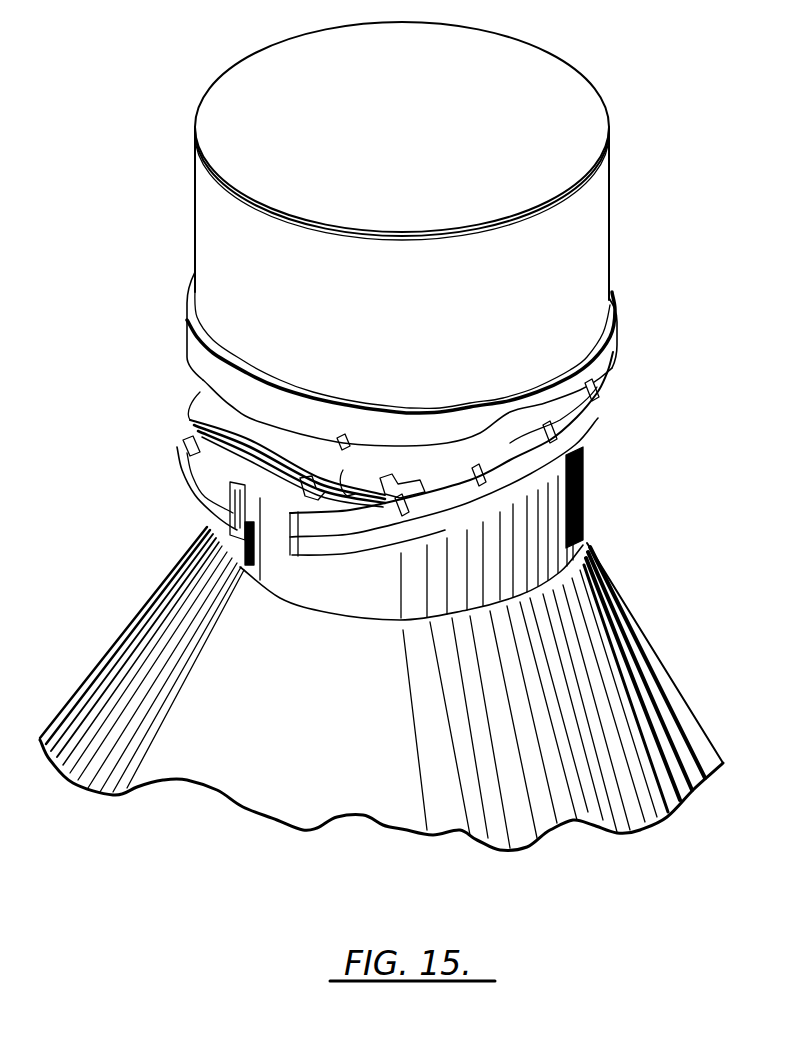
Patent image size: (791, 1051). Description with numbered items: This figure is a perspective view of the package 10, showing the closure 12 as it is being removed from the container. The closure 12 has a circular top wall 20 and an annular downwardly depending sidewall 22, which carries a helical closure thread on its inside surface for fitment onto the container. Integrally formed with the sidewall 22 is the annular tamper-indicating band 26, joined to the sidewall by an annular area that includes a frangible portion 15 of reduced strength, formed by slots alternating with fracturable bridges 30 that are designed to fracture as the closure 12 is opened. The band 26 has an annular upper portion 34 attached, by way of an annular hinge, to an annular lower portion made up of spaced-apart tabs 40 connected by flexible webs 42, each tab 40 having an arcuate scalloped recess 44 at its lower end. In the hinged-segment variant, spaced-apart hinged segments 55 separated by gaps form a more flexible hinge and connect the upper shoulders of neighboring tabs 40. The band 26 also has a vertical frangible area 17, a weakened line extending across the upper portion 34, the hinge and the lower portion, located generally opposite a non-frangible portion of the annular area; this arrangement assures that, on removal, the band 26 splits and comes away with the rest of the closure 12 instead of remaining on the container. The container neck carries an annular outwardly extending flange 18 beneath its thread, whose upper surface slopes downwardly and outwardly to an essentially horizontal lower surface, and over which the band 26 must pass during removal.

The package 10 is at (628, 467).
The closure 12 is at (611, 42).
The frangible portion 15 is at (650, 590).
The vertical frangible area 17 is at (274, 538).
The annular outwardly extending flange 18 is at (235, 475).
The circular top wall 20 is at (396, 126).
The annular downwardly depending sidewall 22 is at (436, 318).
The annular tamper-indicating band 26 is at (622, 373).
The fracturable bridges 30 is at (188, 446).
The annular upper portion 34 is at (412, 560).
The tabs 40 is at (306, 462).
The flexible webs 42 is at (390, 476).
The scalloped recess 44 is at (343, 470).
The hinged segments 55 is at (202, 543).